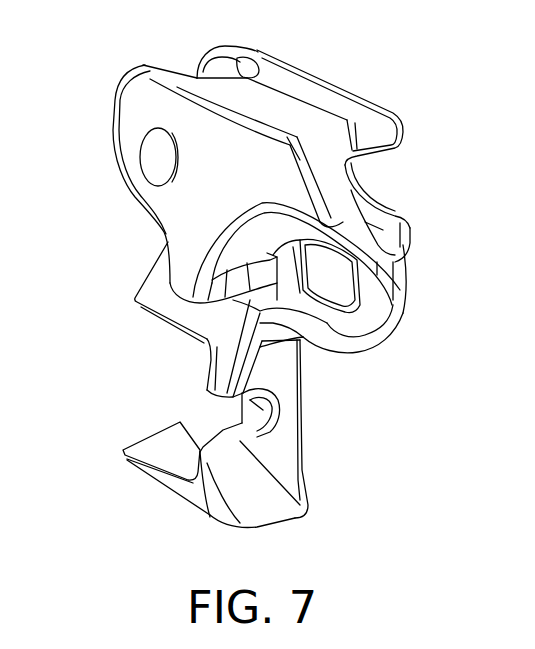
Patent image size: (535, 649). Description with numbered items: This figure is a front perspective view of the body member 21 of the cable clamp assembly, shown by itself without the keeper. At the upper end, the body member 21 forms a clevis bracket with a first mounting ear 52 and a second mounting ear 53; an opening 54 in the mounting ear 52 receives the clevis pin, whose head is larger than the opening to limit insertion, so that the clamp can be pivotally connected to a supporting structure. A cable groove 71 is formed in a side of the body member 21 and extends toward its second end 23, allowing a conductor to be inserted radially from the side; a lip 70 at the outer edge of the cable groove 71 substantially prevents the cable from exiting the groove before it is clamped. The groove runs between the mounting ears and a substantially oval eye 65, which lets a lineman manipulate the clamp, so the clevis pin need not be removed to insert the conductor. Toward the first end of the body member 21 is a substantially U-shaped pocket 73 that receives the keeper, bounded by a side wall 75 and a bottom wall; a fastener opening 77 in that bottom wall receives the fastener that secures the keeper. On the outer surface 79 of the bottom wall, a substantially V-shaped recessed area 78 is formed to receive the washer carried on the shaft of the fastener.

The body member 21 is at (378, 95).
The second end 23 is at (307, 97).
The first mounting ear 52 is at (118, 107).
The second mounting ear 53 is at (227, 44).
The opening 54 is at (142, 145).
The eye 65 is at (357, 297).
The lip 70 is at (393, 210).
The cable groove 71 is at (383, 228).
The pocket 73 is at (160, 318).
The side wall 75 is at (157, 447).
The fastener opening 77 is at (240, 424).
The recessed area 78 is at (290, 380).
The outer surface 79 is at (287, 458).